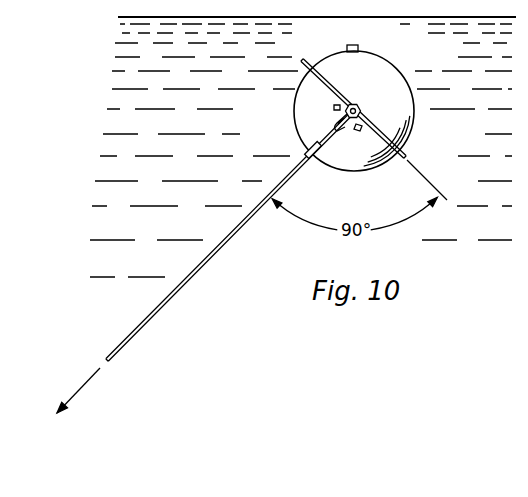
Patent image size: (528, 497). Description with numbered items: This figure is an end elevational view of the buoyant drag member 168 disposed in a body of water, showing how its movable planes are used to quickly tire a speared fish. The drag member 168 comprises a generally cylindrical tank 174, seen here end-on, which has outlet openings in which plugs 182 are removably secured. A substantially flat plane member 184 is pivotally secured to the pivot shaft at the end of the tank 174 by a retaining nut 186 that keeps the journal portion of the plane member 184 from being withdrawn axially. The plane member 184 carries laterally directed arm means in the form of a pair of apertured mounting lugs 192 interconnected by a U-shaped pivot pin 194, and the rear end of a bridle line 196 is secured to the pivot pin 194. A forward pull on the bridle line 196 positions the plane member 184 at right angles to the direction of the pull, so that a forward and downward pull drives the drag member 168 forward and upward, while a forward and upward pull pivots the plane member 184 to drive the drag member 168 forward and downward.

The buoyant drag member 168 is at (388, 58).
The cylindrical tank 174 is at (330, 62).
The plug 182 is at (362, 45).
The plane member 184 is at (407, 152).
The retaining nut 186 is at (362, 109).
The apertured mounting lug 192 is at (334, 108).
The U-shaped pivot pin 194 is at (330, 126).
The bridle line 196 is at (168, 300).